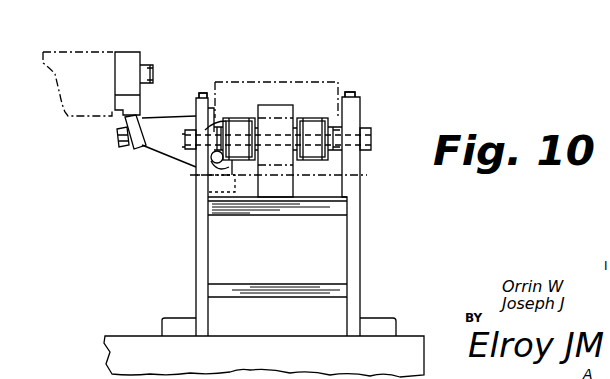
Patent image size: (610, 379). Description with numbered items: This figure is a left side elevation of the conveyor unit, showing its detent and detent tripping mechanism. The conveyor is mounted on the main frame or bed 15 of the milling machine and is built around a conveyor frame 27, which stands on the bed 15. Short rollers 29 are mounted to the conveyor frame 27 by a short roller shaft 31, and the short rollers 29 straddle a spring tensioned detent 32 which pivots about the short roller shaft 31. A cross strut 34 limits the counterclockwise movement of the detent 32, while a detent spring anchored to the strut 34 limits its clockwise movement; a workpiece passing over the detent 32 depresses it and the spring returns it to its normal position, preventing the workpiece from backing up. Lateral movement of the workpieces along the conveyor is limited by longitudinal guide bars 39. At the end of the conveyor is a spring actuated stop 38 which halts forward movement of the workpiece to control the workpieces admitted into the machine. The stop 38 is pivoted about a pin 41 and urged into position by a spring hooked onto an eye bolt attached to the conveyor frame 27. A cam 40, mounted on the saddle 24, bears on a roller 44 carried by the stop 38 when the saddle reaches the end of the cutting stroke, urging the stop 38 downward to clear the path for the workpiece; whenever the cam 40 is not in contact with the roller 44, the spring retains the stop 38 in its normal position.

The main frame or bed 15 is at (148, 355).
The workpiece 24 is at (77, 63).
The conveyor frame 27 is at (352, 225).
The short rollers 29 is at (316, 157).
The short roller shaft 31 is at (340, 136).
The detent 32 is at (272, 106).
The cross strut 34 is at (226, 243).
The spring actuated stop 38 is at (165, 145).
The longitudinal guide bars 39 is at (212, 92).
The cam 40 is at (137, 105).
The pin 41 is at (208, 178).
The roller 44 is at (134, 149).